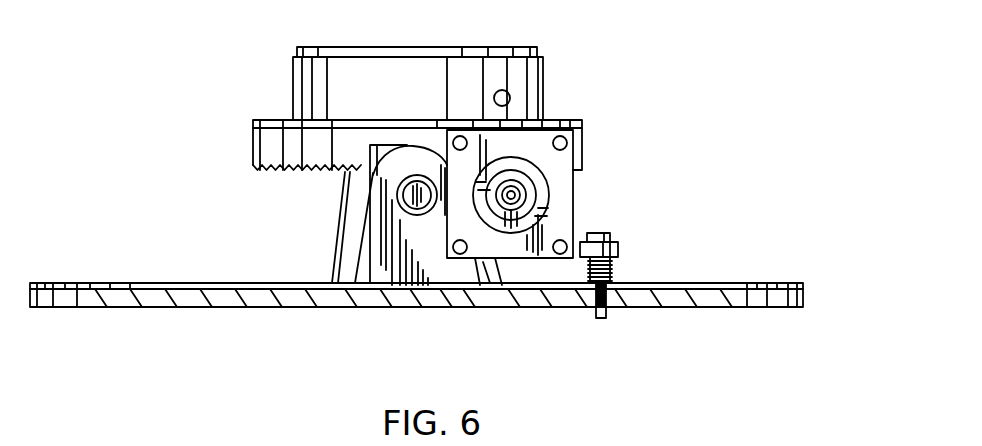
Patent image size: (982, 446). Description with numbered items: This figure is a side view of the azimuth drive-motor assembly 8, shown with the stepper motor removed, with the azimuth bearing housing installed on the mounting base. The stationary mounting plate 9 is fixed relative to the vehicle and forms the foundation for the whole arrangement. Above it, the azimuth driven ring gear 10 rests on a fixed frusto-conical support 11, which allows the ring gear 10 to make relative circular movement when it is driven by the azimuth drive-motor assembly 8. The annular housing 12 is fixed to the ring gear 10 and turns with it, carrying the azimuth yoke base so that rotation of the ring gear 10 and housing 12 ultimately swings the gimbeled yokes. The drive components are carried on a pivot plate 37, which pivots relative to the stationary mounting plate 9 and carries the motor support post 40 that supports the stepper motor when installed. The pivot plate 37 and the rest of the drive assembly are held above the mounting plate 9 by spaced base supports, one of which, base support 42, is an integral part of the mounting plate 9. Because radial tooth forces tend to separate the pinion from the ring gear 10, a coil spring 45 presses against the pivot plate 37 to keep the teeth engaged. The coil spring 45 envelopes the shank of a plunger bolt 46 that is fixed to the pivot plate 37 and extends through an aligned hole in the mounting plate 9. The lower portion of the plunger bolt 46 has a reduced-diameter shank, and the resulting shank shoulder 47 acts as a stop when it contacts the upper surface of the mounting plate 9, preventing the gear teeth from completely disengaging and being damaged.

The azimuth drive-motor assembly 8 is at (575, 104).
The mounting plate 9 is at (178, 298).
The azimuth driven ring gear 10 is at (275, 138).
The frusto-conical support 11 is at (350, 210).
The annular housing 12 is at (303, 83).
The pivot plate 37 is at (615, 248).
The motor support post 40 is at (563, 188).
The base support 42 is at (389, 266).
The coil spring 45 is at (610, 270).
The plunger bolt 46 is at (603, 232).
The shank shoulder 47 is at (608, 280).